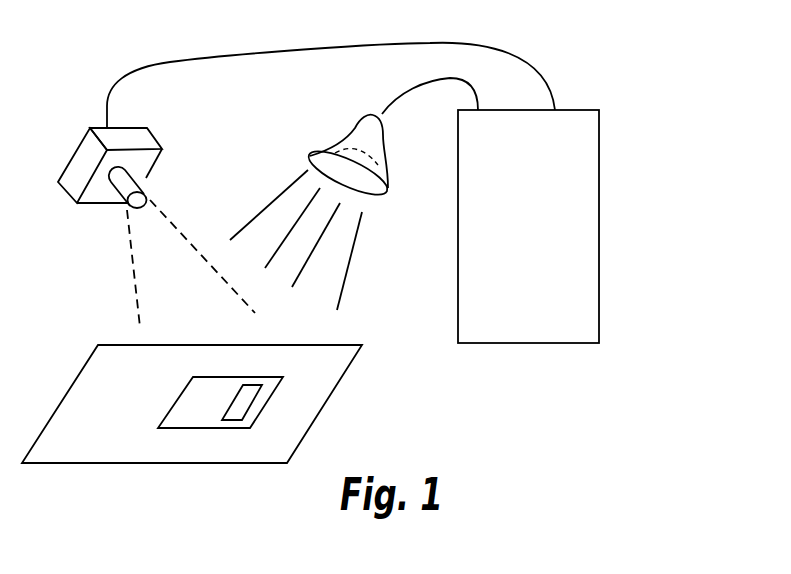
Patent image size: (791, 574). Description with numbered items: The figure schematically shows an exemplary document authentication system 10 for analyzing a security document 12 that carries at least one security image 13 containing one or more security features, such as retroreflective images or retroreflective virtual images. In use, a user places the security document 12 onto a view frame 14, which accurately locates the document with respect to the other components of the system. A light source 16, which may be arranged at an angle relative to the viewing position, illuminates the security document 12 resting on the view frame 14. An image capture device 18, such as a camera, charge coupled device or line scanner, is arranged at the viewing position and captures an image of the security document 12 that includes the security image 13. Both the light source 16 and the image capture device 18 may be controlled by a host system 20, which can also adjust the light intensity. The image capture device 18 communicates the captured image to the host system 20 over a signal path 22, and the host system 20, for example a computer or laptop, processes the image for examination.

The document authentication system 10 is at (118, 48).
The security document 12 is at (228, 430).
The security image 13 is at (247, 400).
The view frame 14 is at (67, 393).
The light source 16 is at (383, 172).
The image capture device 18 is at (82, 157).
The host system 20 is at (547, 237).
The signal path 22 is at (460, 42).